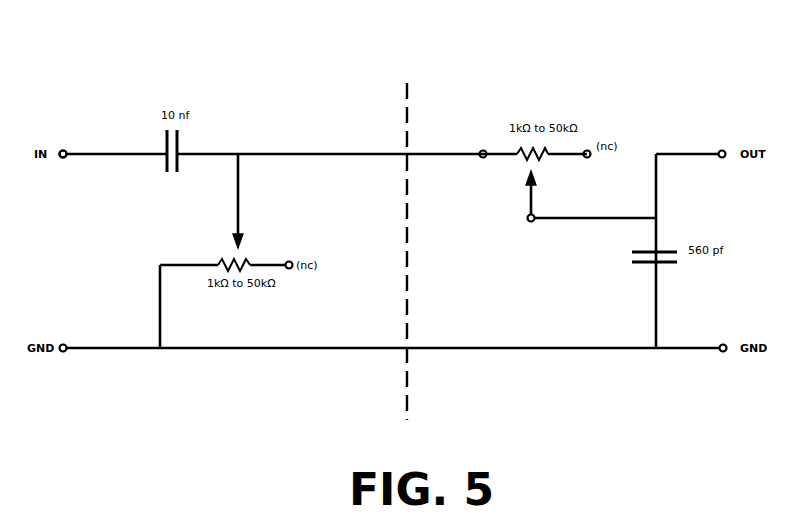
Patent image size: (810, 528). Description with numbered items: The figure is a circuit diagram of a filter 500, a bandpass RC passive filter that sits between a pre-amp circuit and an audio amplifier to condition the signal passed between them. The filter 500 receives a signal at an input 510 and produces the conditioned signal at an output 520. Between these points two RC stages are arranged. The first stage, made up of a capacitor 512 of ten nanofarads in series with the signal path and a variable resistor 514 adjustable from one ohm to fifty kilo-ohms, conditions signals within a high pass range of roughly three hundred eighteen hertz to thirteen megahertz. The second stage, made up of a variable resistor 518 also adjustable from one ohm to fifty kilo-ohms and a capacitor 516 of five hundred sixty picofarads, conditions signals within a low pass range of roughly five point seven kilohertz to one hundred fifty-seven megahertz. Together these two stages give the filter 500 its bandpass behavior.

The filter 500 is at (449, 89).
The signal input 510 is at (66, 151).
The capacitor 512 is at (166, 152).
The resistor 514 is at (244, 262).
The capacitor 516 is at (670, 263).
The resistor 518 is at (545, 153).
The signal output 520 is at (720, 151).